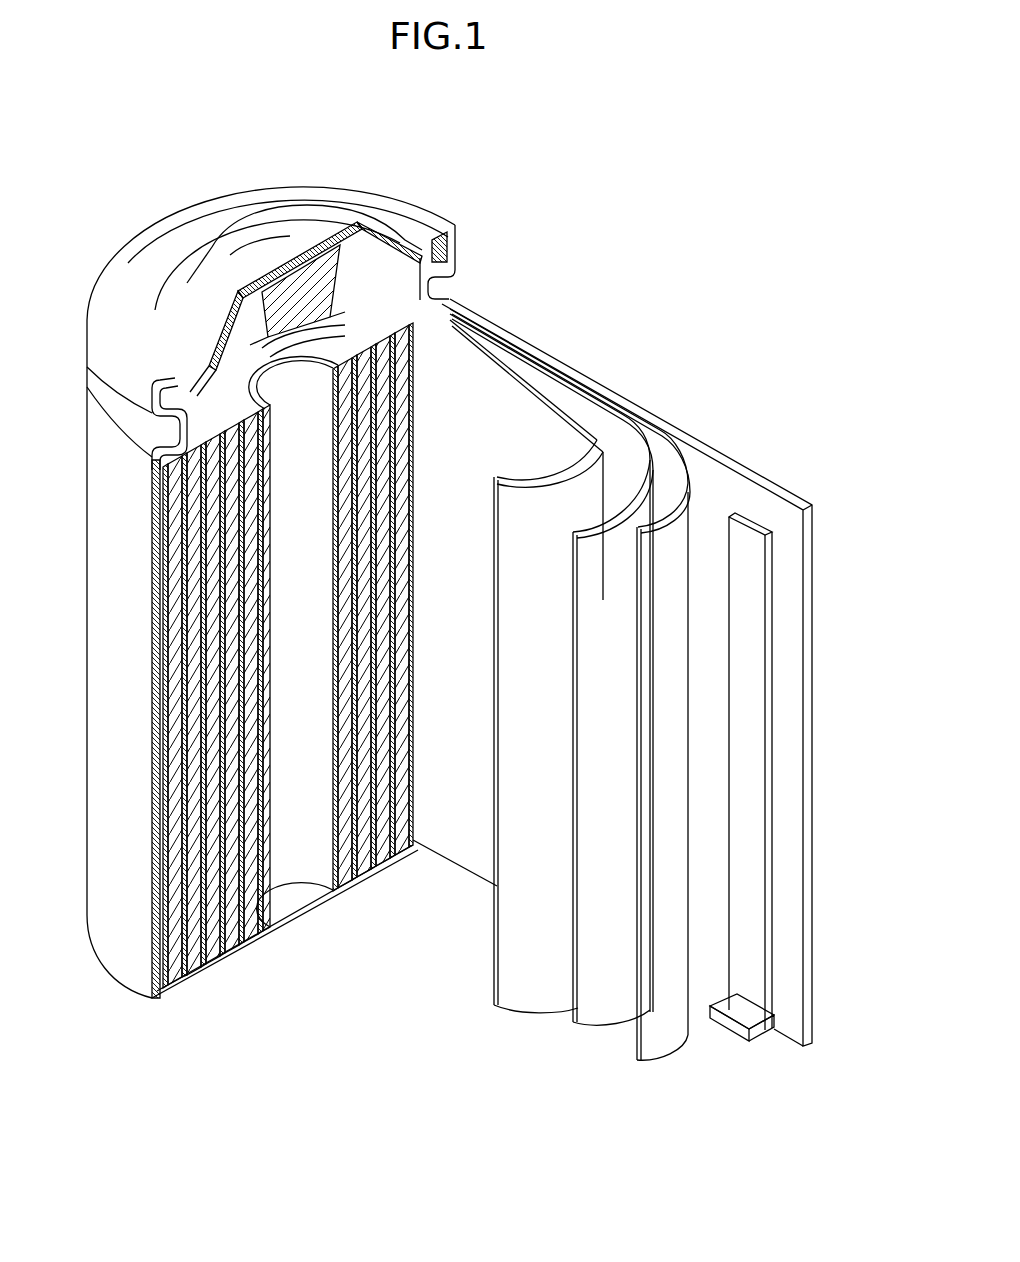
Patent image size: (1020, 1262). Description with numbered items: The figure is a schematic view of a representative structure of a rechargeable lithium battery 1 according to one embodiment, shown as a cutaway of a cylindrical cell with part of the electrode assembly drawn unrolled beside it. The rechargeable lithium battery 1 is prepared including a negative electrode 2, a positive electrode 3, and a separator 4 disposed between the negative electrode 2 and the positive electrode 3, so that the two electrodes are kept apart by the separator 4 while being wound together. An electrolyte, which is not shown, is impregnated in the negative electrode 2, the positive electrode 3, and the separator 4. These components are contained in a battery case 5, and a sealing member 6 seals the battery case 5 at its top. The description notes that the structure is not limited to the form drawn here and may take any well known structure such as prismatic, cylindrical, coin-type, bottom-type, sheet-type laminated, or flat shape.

The rechargeable lithium battery 1 is at (577, 241).
The negative electrode 2 is at (728, 463).
The positive electrode 3 is at (568, 405).
The separator 4 is at (613, 447).
The battery case 5 is at (120, 953).
The sealing member 6 is at (273, 222).